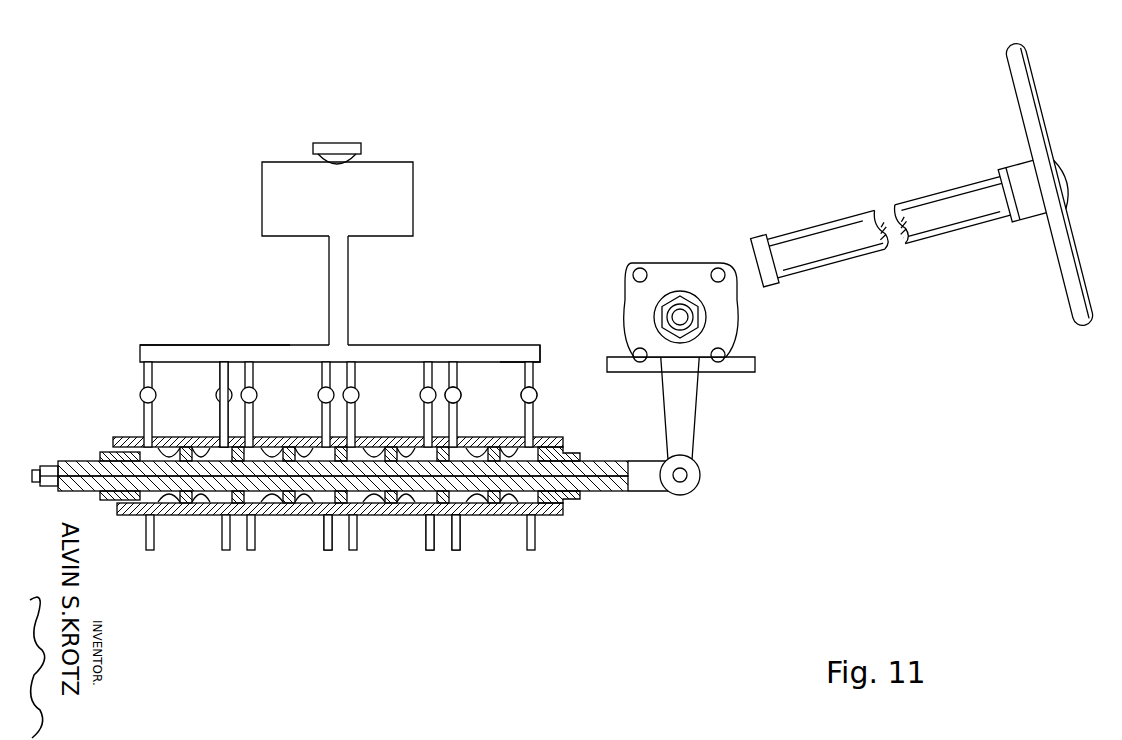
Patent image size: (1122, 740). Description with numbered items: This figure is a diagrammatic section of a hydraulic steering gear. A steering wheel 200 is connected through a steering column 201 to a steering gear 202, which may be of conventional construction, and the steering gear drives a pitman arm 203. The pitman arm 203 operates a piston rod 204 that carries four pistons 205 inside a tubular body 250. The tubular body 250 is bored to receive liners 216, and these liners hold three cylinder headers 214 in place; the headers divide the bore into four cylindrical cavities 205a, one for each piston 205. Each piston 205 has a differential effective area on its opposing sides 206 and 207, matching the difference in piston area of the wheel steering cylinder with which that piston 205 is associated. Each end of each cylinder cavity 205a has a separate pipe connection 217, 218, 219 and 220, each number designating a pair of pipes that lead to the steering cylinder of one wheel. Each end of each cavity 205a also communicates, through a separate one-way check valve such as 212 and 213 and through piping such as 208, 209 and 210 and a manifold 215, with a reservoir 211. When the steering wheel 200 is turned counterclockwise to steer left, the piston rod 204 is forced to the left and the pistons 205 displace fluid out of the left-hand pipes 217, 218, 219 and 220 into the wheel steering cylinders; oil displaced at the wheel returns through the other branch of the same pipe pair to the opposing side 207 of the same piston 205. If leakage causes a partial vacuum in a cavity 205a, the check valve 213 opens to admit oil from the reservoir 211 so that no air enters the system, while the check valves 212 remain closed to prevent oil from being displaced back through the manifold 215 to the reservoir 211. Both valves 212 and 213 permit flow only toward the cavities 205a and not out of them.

The steering wheel 200 is at (1012, 70).
The steering column 201 is at (865, 258).
The steering gear 202 is at (727, 318).
The pitman arm 203 is at (688, 405).
The piston rod 204 is at (648, 480).
The piston 205 is at (182, 452).
The cylindrical cavity 205a is at (135, 498).
The opposing side of piston 206 is at (218, 437).
The opposing side of piston 207 is at (166, 455).
The piping 208 is at (532, 374).
The piping 209 is at (468, 372).
The piping 210 is at (340, 271).
The reservoir 211 is at (378, 172).
The check valve 212 is at (458, 394).
The check valve 213 is at (538, 395).
The cylinder header 214 is at (332, 552).
The manifold 215 is at (292, 352).
The liner 216 is at (200, 447).
The pipe connection 217 is at (508, 574).
The pipe connection 218 is at (352, 552).
The pipe connection 219 is at (320, 555).
The pipe connection 220 is at (195, 568).
The tubular body 250 is at (208, 515).